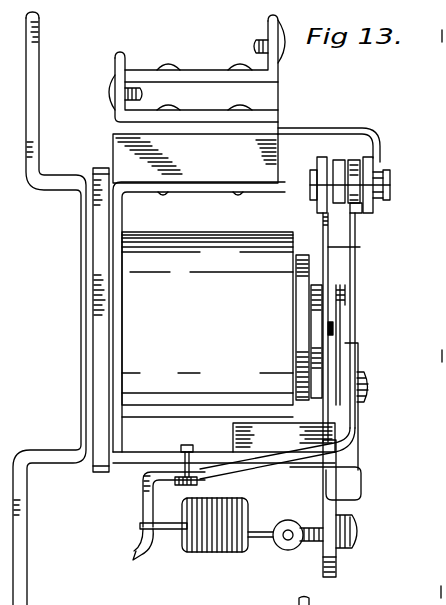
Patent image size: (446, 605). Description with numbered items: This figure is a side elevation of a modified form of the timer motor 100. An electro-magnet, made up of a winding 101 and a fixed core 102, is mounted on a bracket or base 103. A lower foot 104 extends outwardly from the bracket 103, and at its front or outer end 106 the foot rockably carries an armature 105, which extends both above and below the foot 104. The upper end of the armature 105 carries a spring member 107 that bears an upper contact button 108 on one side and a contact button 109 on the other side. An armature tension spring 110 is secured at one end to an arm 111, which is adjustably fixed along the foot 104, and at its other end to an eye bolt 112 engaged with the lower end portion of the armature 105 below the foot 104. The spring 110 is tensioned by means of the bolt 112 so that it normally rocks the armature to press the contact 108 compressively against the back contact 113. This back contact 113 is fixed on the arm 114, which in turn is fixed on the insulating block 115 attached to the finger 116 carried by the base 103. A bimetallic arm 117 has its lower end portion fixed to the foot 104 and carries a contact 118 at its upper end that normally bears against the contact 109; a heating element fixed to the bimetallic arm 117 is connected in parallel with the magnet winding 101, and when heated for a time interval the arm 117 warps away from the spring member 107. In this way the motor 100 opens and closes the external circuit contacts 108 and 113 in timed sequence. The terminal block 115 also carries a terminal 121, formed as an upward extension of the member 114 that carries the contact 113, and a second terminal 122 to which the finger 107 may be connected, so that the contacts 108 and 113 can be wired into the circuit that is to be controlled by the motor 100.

The timer motor 100 is at (132, 468).
The winding 101 is at (192, 260).
The fixed core 102 is at (323, 312).
The bracket or base 103 is at (63, 456).
The lower foot 104 is at (198, 458).
The armature 105 is at (345, 337).
The front or outer end of the foot 106 is at (336, 457).
The spring member 107 is at (352, 273).
The upper contact button 108 is at (357, 206).
The contact button 109 is at (348, 172).
The armature tension spring 110 is at (228, 542).
The arm 111 is at (137, 563).
The eye bolt 112 is at (288, 550).
The back contact 113 is at (374, 172).
The arm 114 is at (340, 132).
The insulating block 115 is at (123, 153).
The finger 116 is at (268, 200).
The bimetallic arm 117 is at (332, 248).
The contact 118 is at (338, 165).
The terminal 121 is at (115, 75).
The second terminal 122 is at (268, 33).